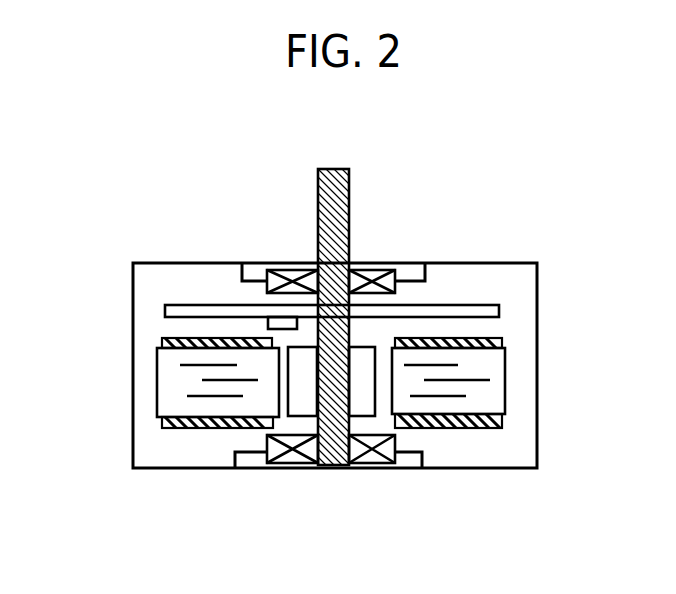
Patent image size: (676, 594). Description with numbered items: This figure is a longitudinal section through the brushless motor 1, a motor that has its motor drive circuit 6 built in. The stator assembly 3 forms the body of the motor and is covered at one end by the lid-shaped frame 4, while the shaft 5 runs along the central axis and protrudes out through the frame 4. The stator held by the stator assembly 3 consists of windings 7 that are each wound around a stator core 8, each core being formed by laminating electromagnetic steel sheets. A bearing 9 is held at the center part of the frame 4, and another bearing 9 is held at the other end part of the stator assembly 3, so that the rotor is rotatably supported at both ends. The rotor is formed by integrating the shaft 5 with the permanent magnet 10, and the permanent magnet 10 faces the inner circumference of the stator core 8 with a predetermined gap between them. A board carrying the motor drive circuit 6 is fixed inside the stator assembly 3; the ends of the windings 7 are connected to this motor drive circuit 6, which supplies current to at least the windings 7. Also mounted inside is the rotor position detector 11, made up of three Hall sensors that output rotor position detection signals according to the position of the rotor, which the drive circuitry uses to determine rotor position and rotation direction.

The brushless motor 1 is at (178, 215).
The stator assembly 3 is at (133, 383).
The frame 4 is at (415, 272).
The shaft 5 is at (349, 170).
The motor drive circuit 6 is at (497, 312).
The windings 7 is at (493, 422).
The stator core 8 is at (487, 368).
The bearing 9 is at (372, 455).
The permanent magnet 10 is at (303, 399).
The rotor position detector 11 is at (268, 324).